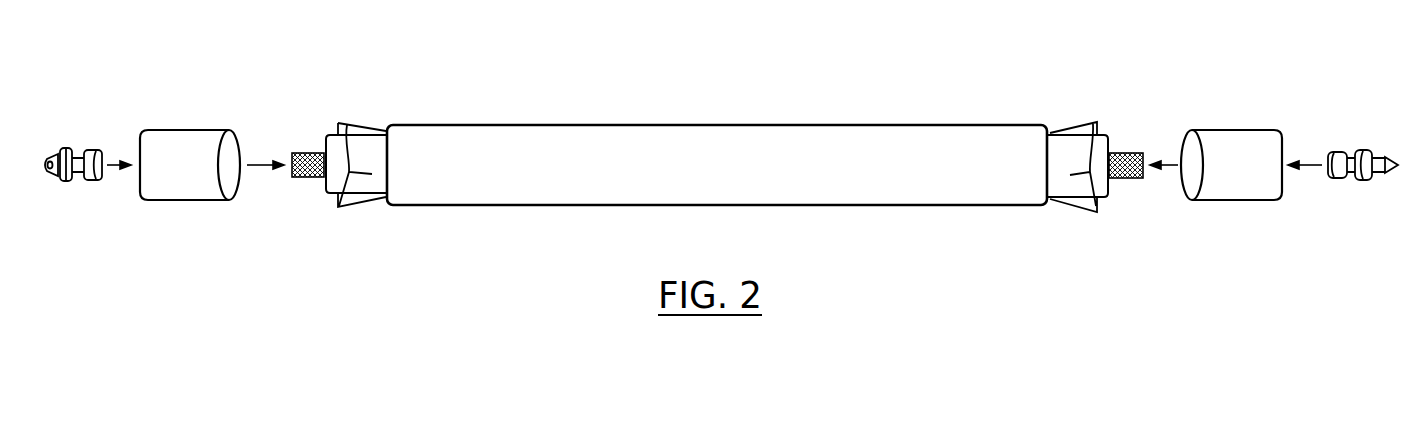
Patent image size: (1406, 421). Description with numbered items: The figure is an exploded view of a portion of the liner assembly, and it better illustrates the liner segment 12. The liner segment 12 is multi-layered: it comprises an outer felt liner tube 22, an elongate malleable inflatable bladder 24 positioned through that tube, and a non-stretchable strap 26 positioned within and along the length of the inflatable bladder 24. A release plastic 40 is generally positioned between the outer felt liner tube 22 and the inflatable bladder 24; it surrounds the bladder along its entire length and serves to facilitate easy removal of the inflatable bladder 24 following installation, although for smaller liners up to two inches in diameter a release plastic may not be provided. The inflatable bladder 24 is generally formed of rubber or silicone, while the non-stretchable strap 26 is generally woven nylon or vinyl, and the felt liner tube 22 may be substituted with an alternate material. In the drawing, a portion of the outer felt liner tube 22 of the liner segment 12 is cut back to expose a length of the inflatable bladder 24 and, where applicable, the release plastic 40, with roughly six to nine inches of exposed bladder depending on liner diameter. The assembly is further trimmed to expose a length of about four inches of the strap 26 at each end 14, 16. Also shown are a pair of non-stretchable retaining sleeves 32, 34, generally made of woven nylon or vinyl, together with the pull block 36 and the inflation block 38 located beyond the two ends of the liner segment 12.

The liner segment 12 is at (717, 165).
The end 14 is at (354, 226).
The end 16 is at (1082, 222).
The outer felt liner tube 22 is at (443, 188).
The elongate malleable inflatable bladder 24 is at (1100, 148).
The non-stretchable strap 26 is at (1122, 180).
The retaining sleeve 32 is at (190, 138).
The retaining sleeve 34 is at (1240, 140).
The pull block 36 is at (70, 180).
The inflation block 38 is at (1368, 178).
The release plastic 40 is at (347, 128).